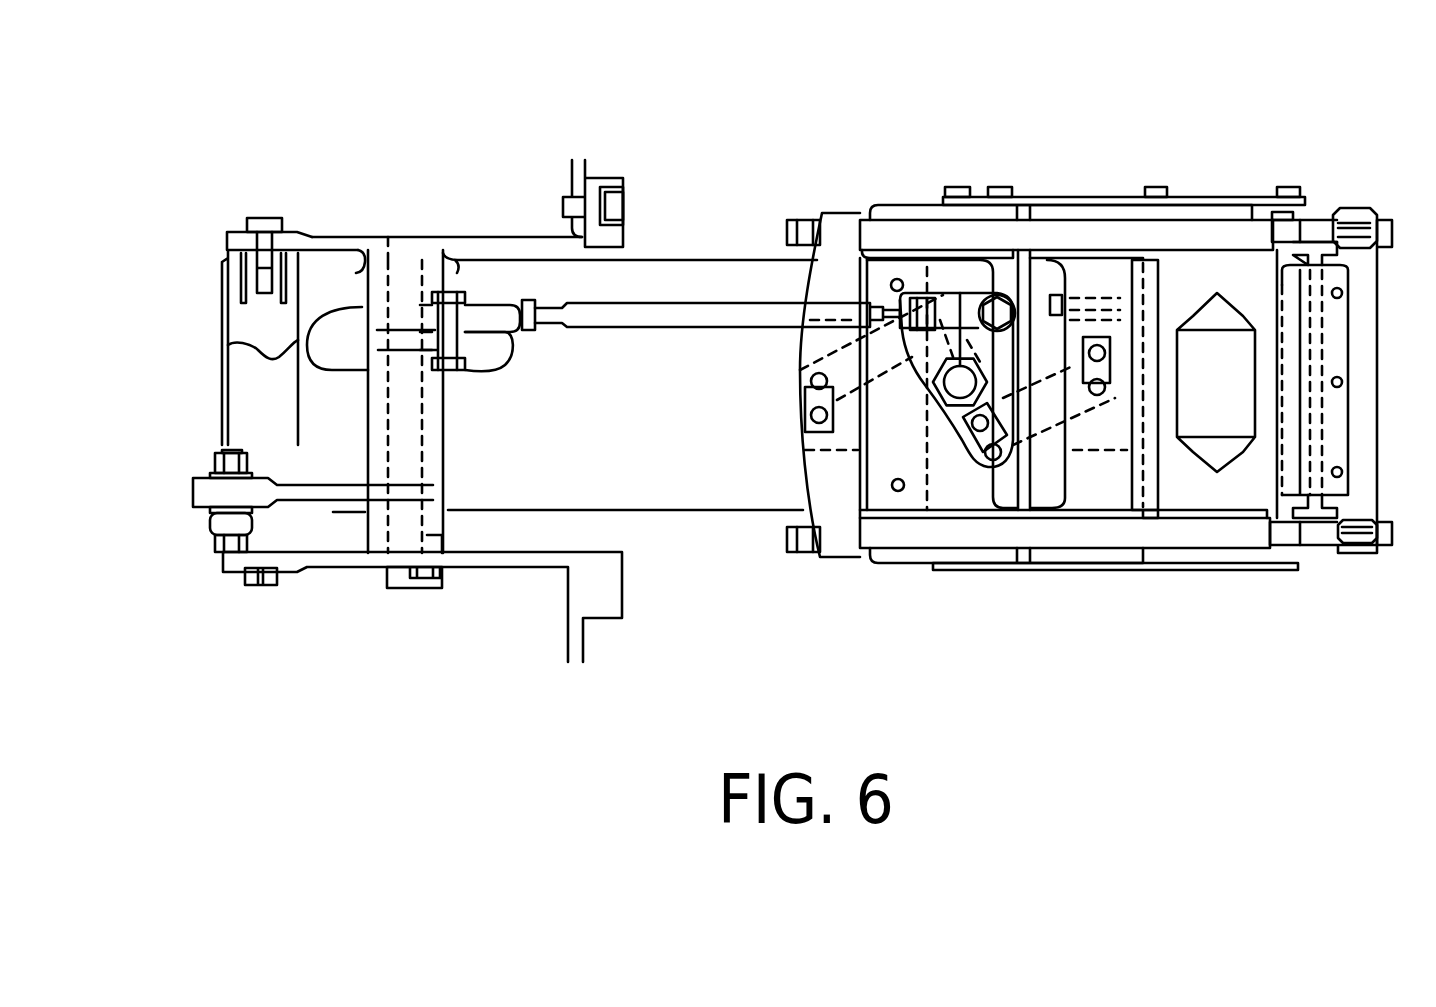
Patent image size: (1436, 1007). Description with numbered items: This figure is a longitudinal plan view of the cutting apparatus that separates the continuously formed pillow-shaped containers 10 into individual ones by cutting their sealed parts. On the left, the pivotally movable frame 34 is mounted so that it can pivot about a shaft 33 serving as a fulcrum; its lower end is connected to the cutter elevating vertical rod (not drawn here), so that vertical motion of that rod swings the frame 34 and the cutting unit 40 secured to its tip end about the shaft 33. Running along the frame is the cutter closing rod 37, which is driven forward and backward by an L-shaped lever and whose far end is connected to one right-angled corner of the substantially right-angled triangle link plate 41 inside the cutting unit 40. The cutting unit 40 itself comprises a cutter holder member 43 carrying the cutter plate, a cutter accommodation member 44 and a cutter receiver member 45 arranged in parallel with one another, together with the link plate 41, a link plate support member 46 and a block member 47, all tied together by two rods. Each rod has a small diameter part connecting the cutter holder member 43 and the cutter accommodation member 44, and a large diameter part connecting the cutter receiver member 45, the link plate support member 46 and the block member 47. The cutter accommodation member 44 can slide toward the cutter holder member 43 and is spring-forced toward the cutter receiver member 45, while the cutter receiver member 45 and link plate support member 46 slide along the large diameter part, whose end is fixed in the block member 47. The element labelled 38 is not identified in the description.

The pillow-shaped container 10 is at (1233, 310).
The shaft 33 is at (245, 325).
The pivotally movable frame 34 is at (660, 436).
The cutter closing rod 37 is at (643, 303).
The top plate 38 is at (1087, 233).
The cutting unit 40 is at (1004, 127).
The link plate 41 is at (957, 447).
The cutter holder member 43 is at (1333, 550).
The cutter accommodation member 44 is at (1276, 468).
The cutter receiver member 45 is at (1083, 490).
The link plate support member 46 is at (963, 490).
The block member 47 is at (802, 470).